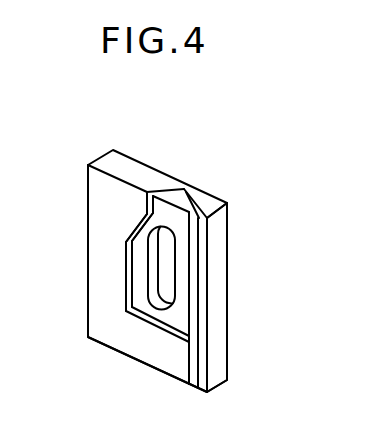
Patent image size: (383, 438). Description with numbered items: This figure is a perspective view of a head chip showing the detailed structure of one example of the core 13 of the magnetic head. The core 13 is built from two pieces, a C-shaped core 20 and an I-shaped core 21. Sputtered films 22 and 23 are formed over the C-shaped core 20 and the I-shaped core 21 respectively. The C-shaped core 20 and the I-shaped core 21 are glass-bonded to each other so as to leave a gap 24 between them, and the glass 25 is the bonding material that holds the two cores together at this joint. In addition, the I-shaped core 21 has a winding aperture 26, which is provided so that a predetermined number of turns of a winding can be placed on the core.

The core 13 is at (86, 156).
The C-shaped core 20 is at (102, 242).
The I-shaped core 21 is at (220, 282).
The sputtered film 22 is at (127, 268).
The sputtered film 23 is at (200, 290).
The gap 24 is at (184, 189).
The glass 25 is at (163, 213).
The winding aperture 26 is at (157, 268).